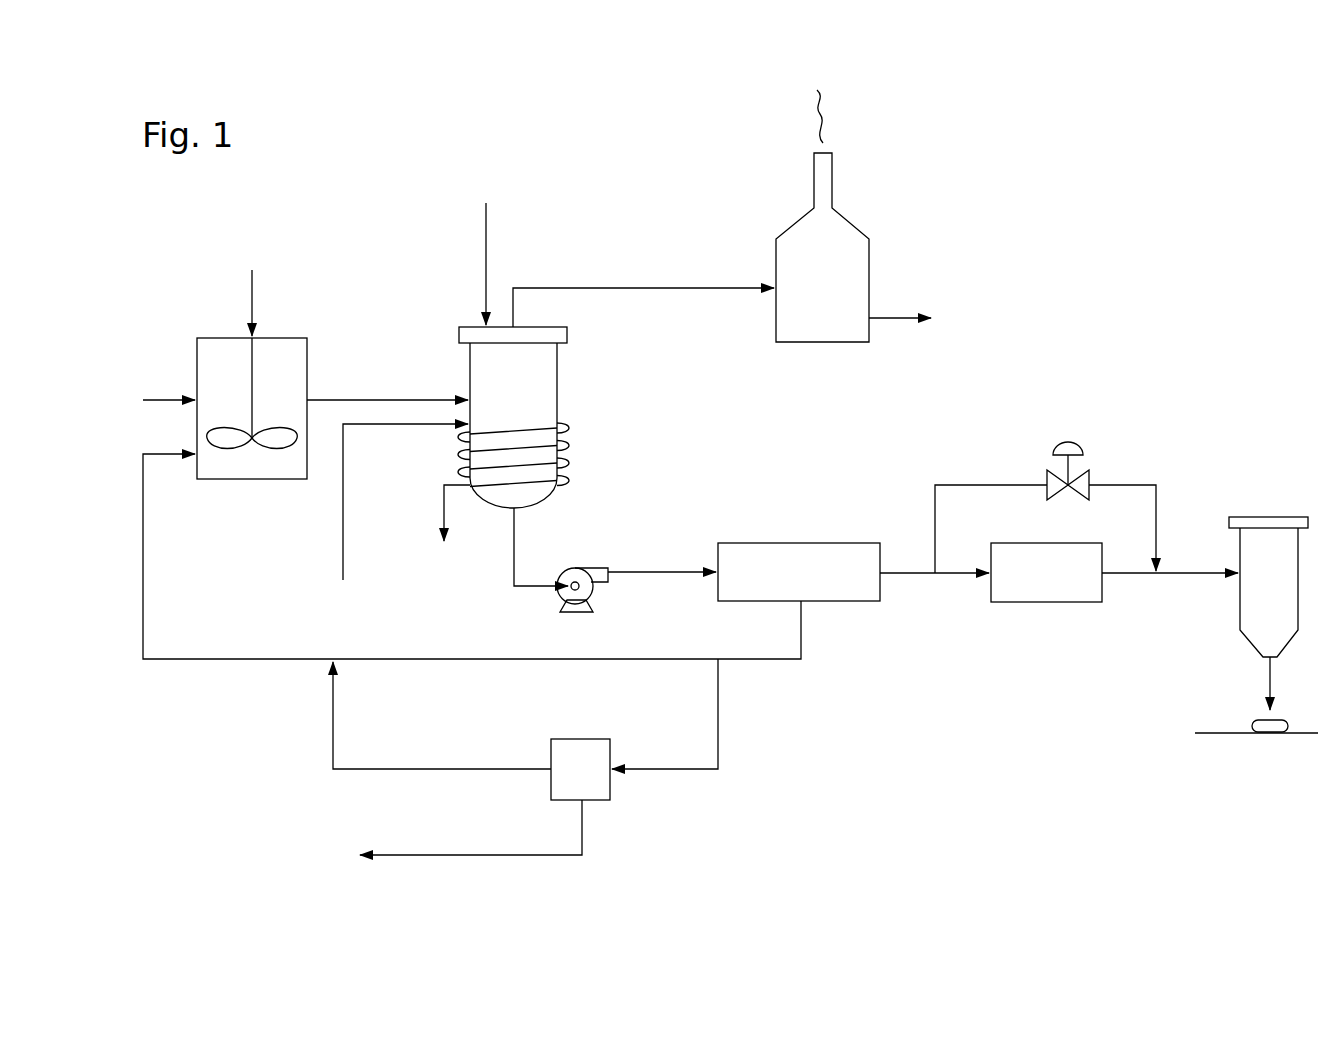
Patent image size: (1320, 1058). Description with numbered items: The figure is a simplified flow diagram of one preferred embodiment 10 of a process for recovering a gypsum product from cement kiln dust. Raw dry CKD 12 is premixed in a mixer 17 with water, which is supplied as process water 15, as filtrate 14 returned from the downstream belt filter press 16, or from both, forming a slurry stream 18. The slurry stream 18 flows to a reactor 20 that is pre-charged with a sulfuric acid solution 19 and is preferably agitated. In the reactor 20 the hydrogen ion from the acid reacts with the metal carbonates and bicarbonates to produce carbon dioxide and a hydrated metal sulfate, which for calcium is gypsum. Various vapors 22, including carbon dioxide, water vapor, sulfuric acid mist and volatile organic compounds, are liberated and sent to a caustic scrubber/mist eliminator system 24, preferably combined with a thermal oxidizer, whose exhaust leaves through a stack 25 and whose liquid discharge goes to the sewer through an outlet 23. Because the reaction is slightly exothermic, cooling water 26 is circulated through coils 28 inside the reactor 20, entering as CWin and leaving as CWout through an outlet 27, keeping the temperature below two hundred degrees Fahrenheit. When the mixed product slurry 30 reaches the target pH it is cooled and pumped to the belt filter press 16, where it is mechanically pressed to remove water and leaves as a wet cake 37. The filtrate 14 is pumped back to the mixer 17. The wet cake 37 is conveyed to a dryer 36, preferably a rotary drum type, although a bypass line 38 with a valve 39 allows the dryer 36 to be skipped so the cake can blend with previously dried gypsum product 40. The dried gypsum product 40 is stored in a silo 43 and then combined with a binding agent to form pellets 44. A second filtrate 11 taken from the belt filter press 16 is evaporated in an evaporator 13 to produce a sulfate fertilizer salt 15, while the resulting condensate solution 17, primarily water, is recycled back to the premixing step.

The embodiment of the method of producing gypsum product 10 is at (1122, 234).
The second filtrate 11 is at (720, 722).
The raw dry CKD 12 is at (158, 400).
The evaporator 13 is at (571, 739).
The filtrate 14 is at (143, 534).
The process water / sulfate fertilizer salt 15 is at (250, 284).
The belt filter press 16 is at (816, 585).
The mixer / condensate solution 17 is at (294, 380).
The slurry stream 18 is at (387, 400).
The sulfuric acid solution 19 is at (486, 257).
The reactor 20 is at (527, 416).
The vapors 22 is at (676, 288).
The sewer line 23 is at (898, 316).
The caustic scrubber/mist eliminator system 24 is at (838, 289).
The exhaust stack 25 is at (832, 118).
The cooling water 26 is at (343, 553).
The cooling water outlet line 27 is at (444, 503).
The coils 28 is at (535, 432).
The product slurry 30 is at (640, 573).
The dryer 36 is at (1063, 583).
The wet cake 37 is at (910, 573).
The bypass line 38 is at (1007, 485).
The control valve 39 is at (1070, 466).
The dried gypsum product 40 is at (1185, 574).
The silo 43 is at (1288, 612).
The pellets 44 is at (1258, 718).